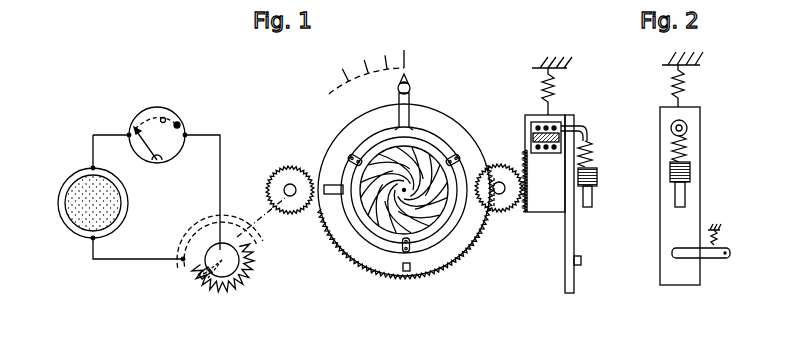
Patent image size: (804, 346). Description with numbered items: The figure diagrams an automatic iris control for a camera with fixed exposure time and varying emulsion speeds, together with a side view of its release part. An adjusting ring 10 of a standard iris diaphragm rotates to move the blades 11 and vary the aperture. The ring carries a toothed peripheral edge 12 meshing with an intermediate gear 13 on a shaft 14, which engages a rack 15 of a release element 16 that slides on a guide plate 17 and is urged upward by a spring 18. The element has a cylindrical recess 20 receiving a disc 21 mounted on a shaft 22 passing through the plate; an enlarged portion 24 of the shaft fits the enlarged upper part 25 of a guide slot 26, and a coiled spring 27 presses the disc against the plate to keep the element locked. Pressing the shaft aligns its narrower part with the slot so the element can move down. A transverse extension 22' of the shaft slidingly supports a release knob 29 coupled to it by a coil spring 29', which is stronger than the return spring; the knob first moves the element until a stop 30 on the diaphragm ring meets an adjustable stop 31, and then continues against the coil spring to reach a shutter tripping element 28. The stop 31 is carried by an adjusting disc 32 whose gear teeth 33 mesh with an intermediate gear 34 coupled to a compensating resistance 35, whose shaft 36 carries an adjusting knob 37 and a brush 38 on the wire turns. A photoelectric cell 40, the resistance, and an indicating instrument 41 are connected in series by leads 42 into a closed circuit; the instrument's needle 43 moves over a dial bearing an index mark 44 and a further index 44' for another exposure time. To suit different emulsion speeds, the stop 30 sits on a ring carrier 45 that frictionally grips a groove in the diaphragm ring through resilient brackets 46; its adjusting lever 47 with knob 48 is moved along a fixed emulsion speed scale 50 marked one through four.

In FIG. 1, the adjusting ring 10 is at (425, 122).
In FIG. 1, the leaves or blades 11 is at (404, 190).
In FIG. 1, the toothed peripheral edge 12 is at (468, 248).
In FIG. 1, the intermediate gear 13 is at (498, 195).
In FIG. 1, the shaft 14 is at (504, 200).
In FIG. 1, the rack 15 is at (525, 214).
In FIG. 1, the release element 16 is at (555, 213).
In FIG. 1, the guide plate 17 is at (574, 245).
In FIG. 2, the guide plate 17 is at (675, 227).
In FIG. 1, the spring 18 is at (553, 90).
In FIG. 2, the spring 18 is at (686, 83).
In FIG. 1, the cylindrical recess 20 is at (530, 117).
In FIG. 1, the plate or disc 21 is at (562, 125).
In FIG. 1, the shaft 22 is at (512, 117).
In FIG. 1, the transverse extension 22' is at (603, 196).
In FIG. 1, the enlarged portion 24 is at (583, 134).
In FIG. 2, the enlarged upper part 25 is at (688, 124).
In FIG. 2, the guide slot 26 is at (686, 193).
In FIG. 1, the coiled spring 27 is at (526, 152).
In FIG. 1, the shutter release or tripping element 28 is at (581, 261).
In FIG. 2, the shutter release or tripping element 28 is at (677, 254).
In FIG. 1, the release knob 29 is at (600, 177).
In FIG. 2, the release knob 29 is at (701, 170).
In FIG. 1, the coil spring 29' is at (600, 154).
In FIG. 2, the coil spring 29' is at (704, 146).
In FIG. 1, the stop or projection 30 is at (330, 193).
In FIG. 1, the adjustable stop 31 is at (407, 272).
In FIG. 1, the adjusting ring or disc 32 is at (362, 122).
In FIG. 1, the gear teeth 33 is at (346, 252).
In FIG. 1, the intermediate gear 34 is at (290, 167).
In FIG. 1, the compensating resistance 35 is at (252, 260).
In FIG. 1, the shaft 36 is at (243, 283).
In FIG. 1, the adjusting knob 37 is at (222, 284).
In FIG. 1, the brush or sliding element 38 is at (210, 282).
In FIG. 1, the photoelectric cell 40 is at (80, 193).
In FIG. 1, the electric indicating instrument 41 is at (165, 95).
In FIG. 1, the connecting leads 42 is at (93, 166).
In FIG. 1, the indicating pointer or needle 43 is at (148, 160).
In FIG. 1, the index or adjusting mark 44 is at (195, 120).
In FIG. 1, the index 44' is at (168, 110).
In FIG. 1, the ring shaped carrier 45 is at (435, 244).
In FIG. 1, the resilient retaining brackets or bridges 46 is at (356, 157).
In FIG. 1, the radial extension or adjusting lever 47 is at (409, 115).
In FIG. 1, the adjusting knob 48 is at (412, 86).
In FIG. 1, the scale of emulsion speeds 50 is at (329, 88).